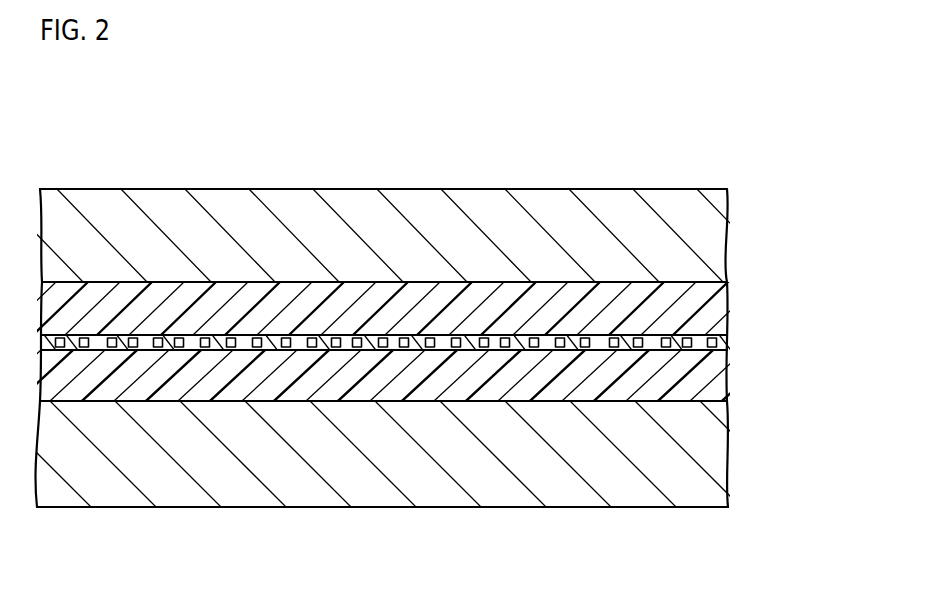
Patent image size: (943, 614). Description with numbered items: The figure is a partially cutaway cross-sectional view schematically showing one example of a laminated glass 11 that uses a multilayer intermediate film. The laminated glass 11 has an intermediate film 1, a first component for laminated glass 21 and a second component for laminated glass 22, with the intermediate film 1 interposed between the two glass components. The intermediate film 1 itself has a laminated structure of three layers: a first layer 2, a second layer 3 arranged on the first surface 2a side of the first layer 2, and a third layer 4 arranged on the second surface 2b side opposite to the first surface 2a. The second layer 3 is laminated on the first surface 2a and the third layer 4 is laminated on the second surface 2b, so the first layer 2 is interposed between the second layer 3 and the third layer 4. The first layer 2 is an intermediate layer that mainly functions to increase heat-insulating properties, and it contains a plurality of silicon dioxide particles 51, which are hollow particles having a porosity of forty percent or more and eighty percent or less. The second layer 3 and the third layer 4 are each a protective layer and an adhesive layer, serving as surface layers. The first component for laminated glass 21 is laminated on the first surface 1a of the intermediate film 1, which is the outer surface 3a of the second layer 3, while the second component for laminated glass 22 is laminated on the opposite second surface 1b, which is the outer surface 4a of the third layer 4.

The laminated glass 11 is at (188, 150).
The first component for laminated glass 21 is at (727, 233).
The second component for laminated glass 22 is at (727, 458).
The intermediate film 1 is at (292, 272).
The first surface 1a is at (394, 282).
The second surface 1b is at (393, 401).
The first layer 2 is at (736, 342).
The first surface 2a is at (484, 335).
The second surface 2b is at (485, 350).
The second layer 3 is at (736, 306).
The outer surface 3a is at (637, 282).
The third layer 4 is at (736, 375).
The outer surface 4a is at (627, 401).
The silicon dioxide particles 51 is at (203, 350).